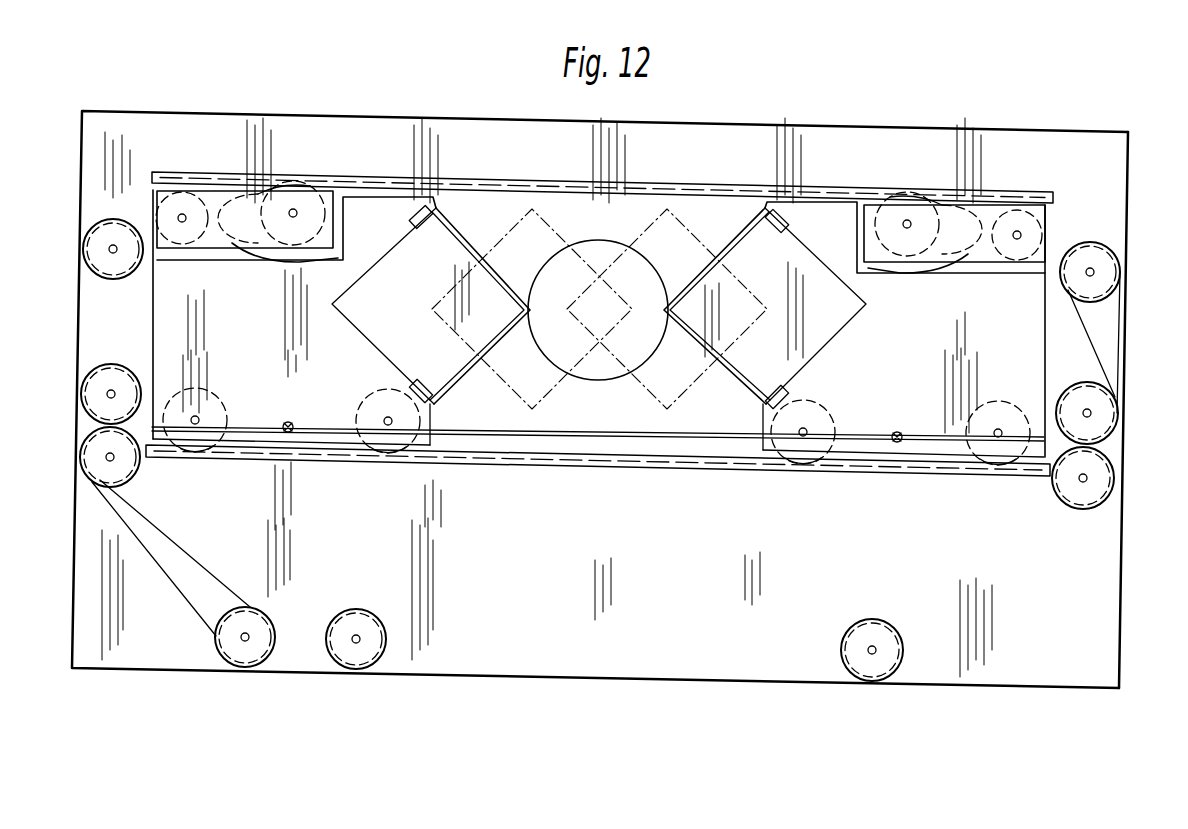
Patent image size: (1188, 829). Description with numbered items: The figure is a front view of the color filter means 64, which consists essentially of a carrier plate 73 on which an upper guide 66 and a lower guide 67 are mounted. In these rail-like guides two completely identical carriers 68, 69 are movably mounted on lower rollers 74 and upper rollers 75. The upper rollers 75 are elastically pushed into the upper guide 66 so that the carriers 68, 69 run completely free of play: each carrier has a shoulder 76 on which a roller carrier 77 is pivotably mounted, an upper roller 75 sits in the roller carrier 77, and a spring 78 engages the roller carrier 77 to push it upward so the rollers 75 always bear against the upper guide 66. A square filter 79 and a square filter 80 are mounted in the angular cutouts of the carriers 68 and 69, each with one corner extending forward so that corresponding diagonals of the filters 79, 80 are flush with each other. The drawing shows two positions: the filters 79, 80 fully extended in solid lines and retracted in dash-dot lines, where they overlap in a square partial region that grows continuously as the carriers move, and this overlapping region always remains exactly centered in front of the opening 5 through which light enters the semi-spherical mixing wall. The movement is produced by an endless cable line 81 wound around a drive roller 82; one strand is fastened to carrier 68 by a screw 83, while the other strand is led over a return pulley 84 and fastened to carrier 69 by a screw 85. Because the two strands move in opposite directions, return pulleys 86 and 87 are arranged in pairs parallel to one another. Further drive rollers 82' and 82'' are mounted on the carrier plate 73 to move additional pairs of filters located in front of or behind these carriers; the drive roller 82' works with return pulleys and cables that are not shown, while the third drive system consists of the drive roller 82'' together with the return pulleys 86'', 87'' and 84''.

The opening 5 is at (591, 243).
The color filter means 64 is at (1161, 505).
The upper guide 66 is at (1017, 189).
The lower guide 67 is at (923, 473).
The carrier 68 is at (162, 330).
The carrier 69 is at (1030, 363).
The carrier plate 73 is at (1113, 232).
The rollers 74 is at (194, 451).
The upper rollers 75 is at (297, 190).
The shoulder 76 is at (178, 255).
The roller carrier 77 is at (220, 249).
The spring 78 is at (260, 252).
The filter 79 is at (449, 381).
The filter 80 is at (745, 388).
The endless cable line 81 is at (210, 570).
The drive roller 82 is at (245, 666).
The drive roller 82' is at (356, 667).
The drive roller 82'' is at (869, 677).
The screw 83 is at (288, 421).
The return pulley 84 is at (1090, 254).
The return pulley 84'' is at (90, 249).
The screw 85 is at (896, 432).
The return pulley 86 is at (122, 468).
The return pulley 86'' is at (1081, 496).
The return pulley 87 is at (1108, 413).
The return pulley 87'' is at (87, 394).